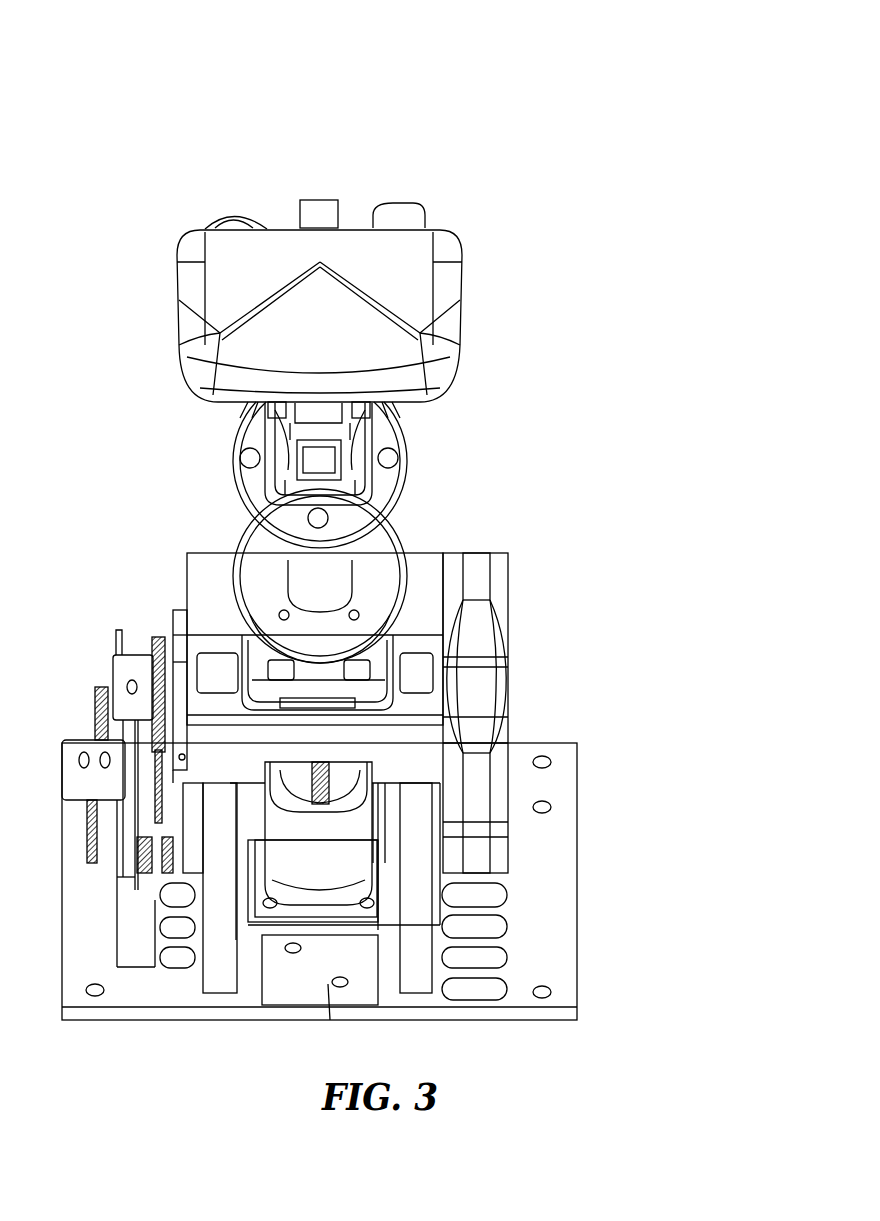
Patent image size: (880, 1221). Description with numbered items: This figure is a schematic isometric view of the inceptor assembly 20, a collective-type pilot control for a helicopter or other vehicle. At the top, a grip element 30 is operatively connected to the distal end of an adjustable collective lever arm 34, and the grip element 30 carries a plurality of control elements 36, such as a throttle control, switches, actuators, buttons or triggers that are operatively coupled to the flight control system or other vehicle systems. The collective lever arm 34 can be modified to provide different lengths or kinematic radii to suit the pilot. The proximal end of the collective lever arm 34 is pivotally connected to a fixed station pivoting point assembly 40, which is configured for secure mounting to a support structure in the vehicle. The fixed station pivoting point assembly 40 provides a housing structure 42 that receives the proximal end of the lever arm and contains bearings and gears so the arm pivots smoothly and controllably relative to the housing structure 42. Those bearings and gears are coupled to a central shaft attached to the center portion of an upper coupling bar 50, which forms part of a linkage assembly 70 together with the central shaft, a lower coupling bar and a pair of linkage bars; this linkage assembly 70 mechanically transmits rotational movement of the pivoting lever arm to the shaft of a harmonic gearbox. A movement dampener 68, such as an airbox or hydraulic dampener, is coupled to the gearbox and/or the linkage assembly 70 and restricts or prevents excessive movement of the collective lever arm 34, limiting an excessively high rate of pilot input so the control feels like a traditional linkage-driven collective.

The inceptor assembly 20 is at (497, 328).
The grip element 30 is at (357, 268).
The collective lever arm 34 is at (330, 577).
The control elements 36 is at (233, 213).
The fixed station pivoting point assembly 40 is at (200, 566).
The housing structure 42 is at (432, 597).
The upper coupling bar 50 is at (485, 705).
The movement dampener 68 is at (327, 862).
The linkage assembly 70 is at (507, 632).